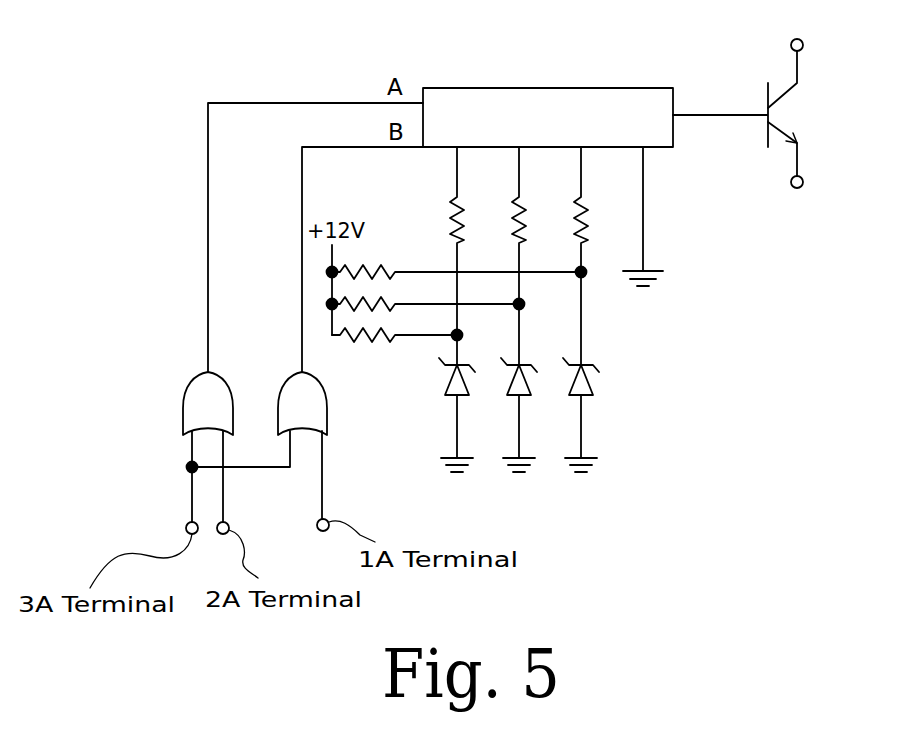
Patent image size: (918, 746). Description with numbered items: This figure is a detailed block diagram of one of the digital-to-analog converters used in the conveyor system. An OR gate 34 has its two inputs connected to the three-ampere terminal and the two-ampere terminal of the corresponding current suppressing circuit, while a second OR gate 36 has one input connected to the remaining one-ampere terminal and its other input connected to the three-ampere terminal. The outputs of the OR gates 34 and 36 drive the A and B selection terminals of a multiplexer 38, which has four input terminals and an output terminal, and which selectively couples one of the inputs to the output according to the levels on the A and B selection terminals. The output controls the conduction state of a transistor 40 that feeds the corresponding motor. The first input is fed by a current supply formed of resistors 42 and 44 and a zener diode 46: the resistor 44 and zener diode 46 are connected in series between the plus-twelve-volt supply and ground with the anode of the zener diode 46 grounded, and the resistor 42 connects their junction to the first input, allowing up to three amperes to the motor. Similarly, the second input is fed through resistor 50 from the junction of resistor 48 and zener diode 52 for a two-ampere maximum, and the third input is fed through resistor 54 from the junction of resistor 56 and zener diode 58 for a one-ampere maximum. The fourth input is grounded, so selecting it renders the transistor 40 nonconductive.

The OR gate 34 is at (198, 400).
The OR gate 36 is at (313, 398).
The multiplexer 38 is at (539, 97).
The transistor 40 is at (746, 113).
The resistor 42 is at (450, 209).
The resistor 44 is at (375, 342).
The zener diode 46 is at (463, 393).
The resistor 48 is at (342, 300).
The resistor 50 is at (530, 243).
The zener diode 52 is at (527, 397).
The resistor 54 is at (589, 220).
The resistor 56 is at (366, 268).
The zener diode 58 is at (582, 385).